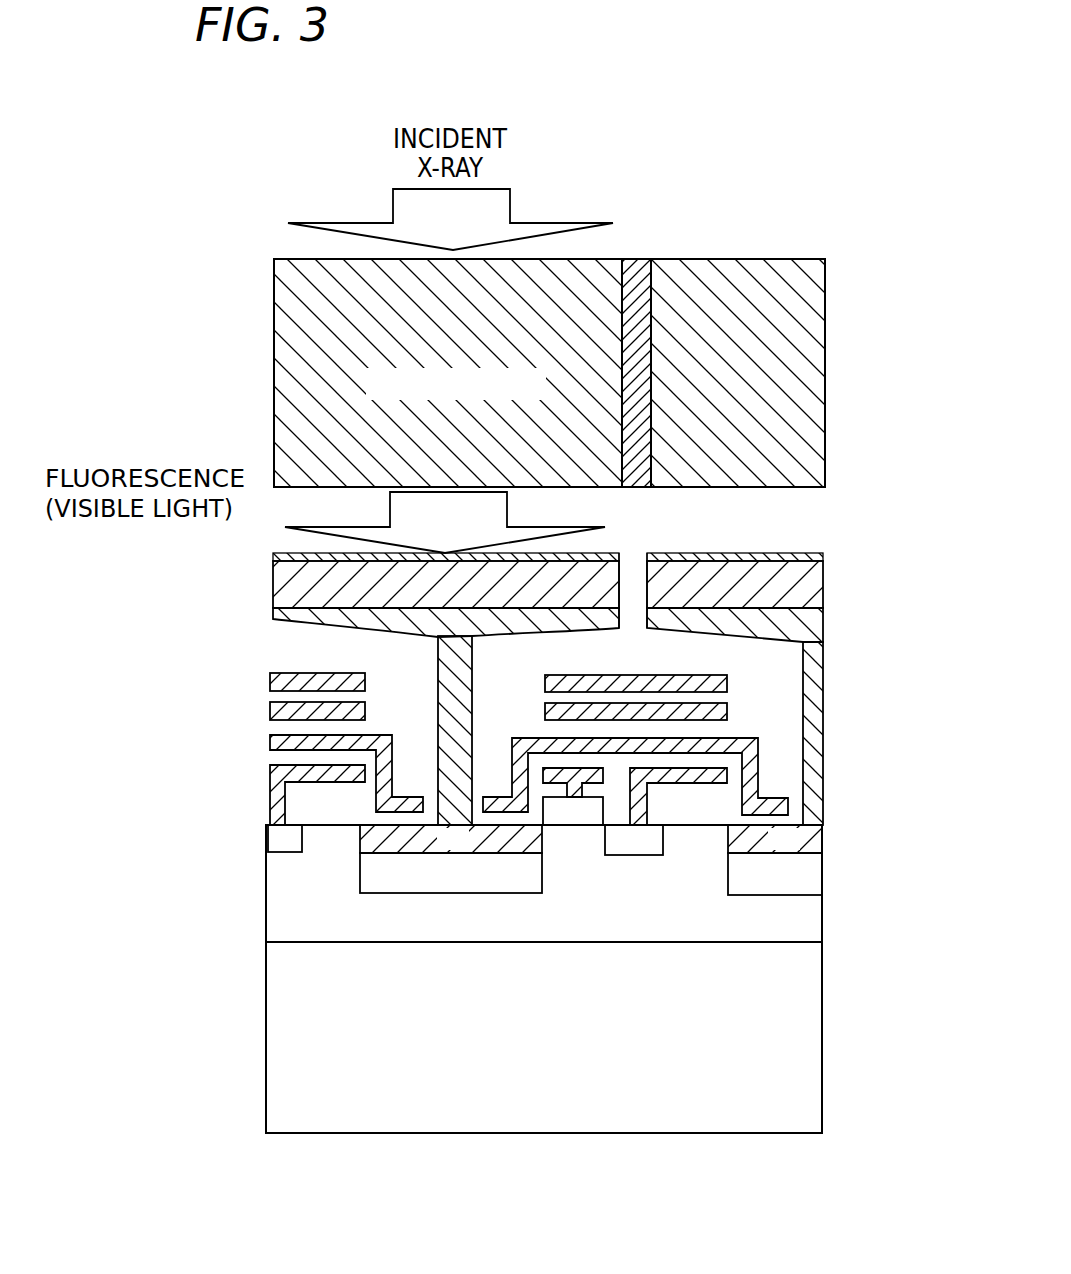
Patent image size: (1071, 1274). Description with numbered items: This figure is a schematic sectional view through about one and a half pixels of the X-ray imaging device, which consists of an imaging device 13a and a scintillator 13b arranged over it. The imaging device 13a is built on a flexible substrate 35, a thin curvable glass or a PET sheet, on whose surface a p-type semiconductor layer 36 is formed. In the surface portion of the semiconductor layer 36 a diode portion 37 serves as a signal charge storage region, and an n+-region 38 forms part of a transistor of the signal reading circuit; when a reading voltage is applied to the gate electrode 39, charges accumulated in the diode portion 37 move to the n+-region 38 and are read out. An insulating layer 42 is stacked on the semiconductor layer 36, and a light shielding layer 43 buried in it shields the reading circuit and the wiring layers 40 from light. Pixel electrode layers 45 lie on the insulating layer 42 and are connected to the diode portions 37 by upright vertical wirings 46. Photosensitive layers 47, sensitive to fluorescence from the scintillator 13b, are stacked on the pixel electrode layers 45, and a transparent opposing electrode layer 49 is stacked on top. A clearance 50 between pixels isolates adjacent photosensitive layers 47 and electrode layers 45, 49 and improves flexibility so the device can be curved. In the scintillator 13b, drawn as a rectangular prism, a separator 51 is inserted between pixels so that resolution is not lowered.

The imaging device 13a is at (265, 1100).
The scintillator 13b is at (273, 305).
The flexible substrate 35 is at (800, 1067).
The p-type semiconductor layer 36 is at (807, 930).
The diode portion 37 is at (393, 895).
The n+-region 38 is at (270, 838).
The gate electrode 39 is at (565, 826).
The wiring layers 40 is at (270, 682).
The insulating layer 42 is at (287, 655).
The light shielding layer 43 is at (270, 741).
The pixel electrode layer 45 is at (310, 622).
The vertical wiring 46 is at (472, 692).
The photosensitive layer 47 is at (292, 588).
The transparent opposing electrode layer 49 is at (272, 553).
The clearance 50 is at (630, 575).
The separator 51 is at (637, 272).